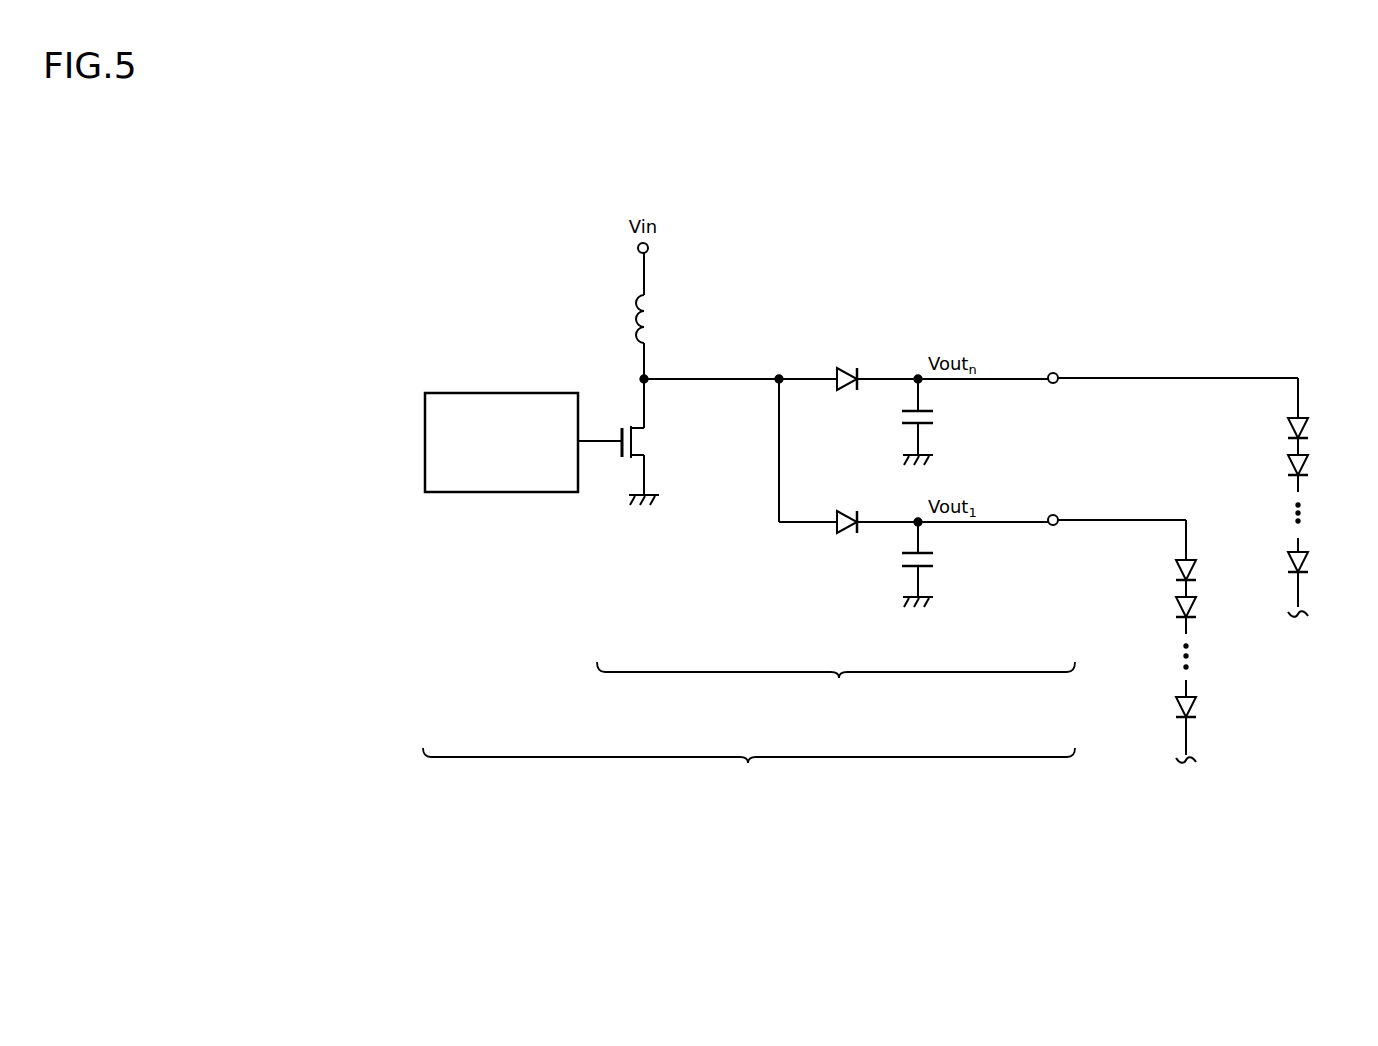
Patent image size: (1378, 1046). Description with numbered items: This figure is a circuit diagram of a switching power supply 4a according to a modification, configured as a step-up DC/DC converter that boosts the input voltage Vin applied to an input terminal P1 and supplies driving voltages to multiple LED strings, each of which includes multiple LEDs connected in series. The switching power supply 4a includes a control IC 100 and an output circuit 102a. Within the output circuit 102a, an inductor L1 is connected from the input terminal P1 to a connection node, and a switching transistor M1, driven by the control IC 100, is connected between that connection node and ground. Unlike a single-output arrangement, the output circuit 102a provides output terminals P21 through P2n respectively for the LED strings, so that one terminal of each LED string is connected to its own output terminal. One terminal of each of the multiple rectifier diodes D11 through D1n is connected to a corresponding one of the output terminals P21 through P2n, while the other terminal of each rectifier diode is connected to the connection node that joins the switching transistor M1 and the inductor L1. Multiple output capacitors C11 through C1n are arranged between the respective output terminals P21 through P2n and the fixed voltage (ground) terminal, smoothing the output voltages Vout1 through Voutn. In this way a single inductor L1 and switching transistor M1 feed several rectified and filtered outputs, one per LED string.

The input terminal P1 is at (649, 247).
The inductor L1 is at (653, 310).
The switching transistor M1 is at (652, 443).
The control IC 100 is at (510, 494).
The rectifier diode D1n is at (846, 394).
The rectifier diode D11 is at (846, 537).
The output capacitor C1n is at (936, 418).
The output capacitor C11 is at (936, 561).
The output terminal P2n is at (1057, 374).
The output terminal P21 is at (1057, 516).
The output circuit 102a is at (836, 686).
The switching power supply 4a is at (749, 772).